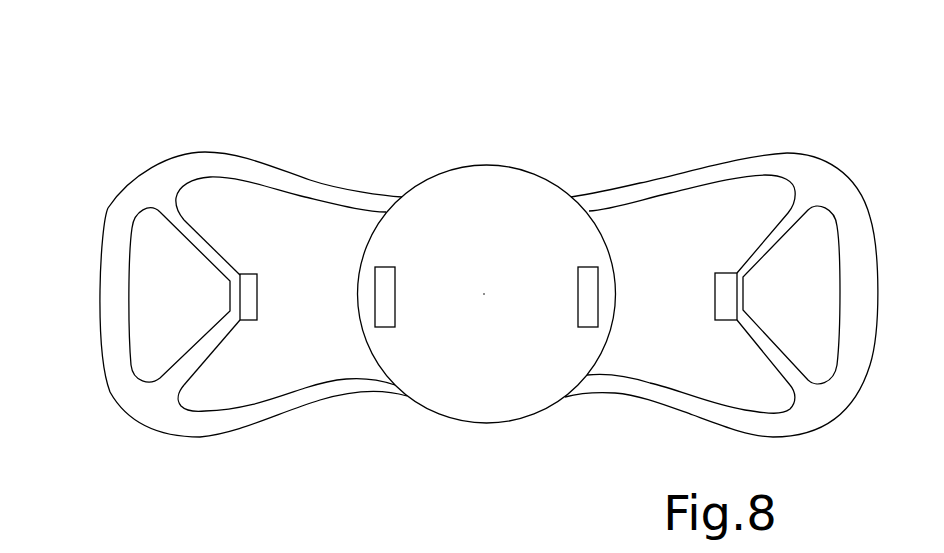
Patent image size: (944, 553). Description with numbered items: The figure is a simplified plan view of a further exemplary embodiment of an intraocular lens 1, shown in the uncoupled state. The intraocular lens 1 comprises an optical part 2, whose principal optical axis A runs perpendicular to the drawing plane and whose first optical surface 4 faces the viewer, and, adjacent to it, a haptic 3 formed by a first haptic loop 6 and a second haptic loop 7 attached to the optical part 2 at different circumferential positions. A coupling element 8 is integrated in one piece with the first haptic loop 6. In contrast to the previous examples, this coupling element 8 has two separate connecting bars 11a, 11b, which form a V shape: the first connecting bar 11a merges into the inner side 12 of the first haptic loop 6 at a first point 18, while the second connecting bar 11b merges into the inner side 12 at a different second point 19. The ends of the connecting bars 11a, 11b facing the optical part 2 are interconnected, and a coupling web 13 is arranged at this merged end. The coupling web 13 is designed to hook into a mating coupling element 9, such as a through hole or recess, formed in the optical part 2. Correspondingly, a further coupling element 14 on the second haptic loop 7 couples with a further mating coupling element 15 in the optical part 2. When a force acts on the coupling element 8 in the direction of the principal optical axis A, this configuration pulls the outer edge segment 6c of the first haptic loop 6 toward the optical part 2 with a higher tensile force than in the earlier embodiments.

The intraocular lens 1 is at (436, 148).
The optical part 2 is at (479, 202).
The haptic 3 is at (373, 410).
The first optical surface 4 is at (517, 197).
The first haptic loop 6 is at (167, 130).
The outer edge segment 6c is at (96, 230).
The second haptic loop 7 is at (822, 148).
The coupling element 8 is at (245, 342).
The mating coupling element 9 is at (373, 279).
The first connecting bar 11a is at (195, 352).
The second connecting bar 11b is at (200, 237).
The inner side 12 is at (134, 297).
The coupling web 13 is at (258, 276).
The further coupling element 14 is at (759, 223).
The further mating coupling element 15 is at (612, 268).
The first point 18 is at (195, 401).
The second point 19 is at (152, 221).
The principal optical axis A is at (484, 293).